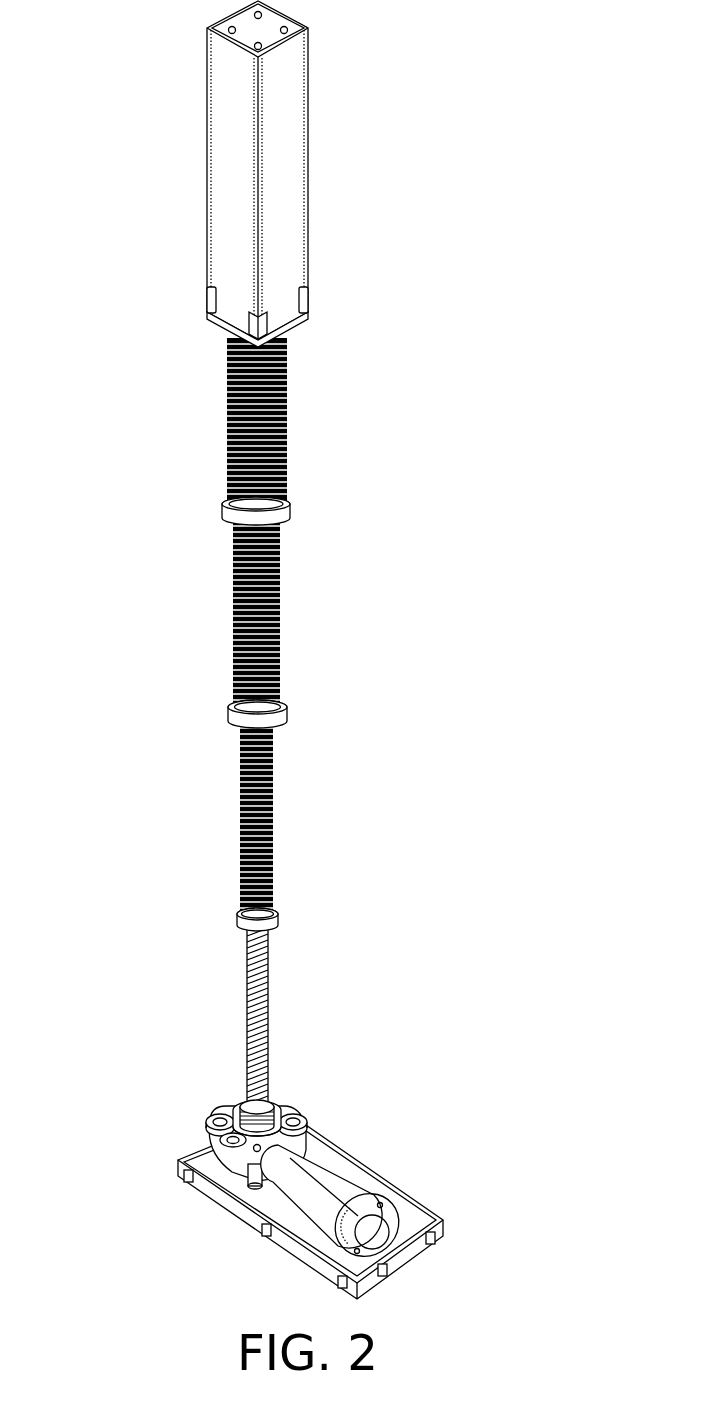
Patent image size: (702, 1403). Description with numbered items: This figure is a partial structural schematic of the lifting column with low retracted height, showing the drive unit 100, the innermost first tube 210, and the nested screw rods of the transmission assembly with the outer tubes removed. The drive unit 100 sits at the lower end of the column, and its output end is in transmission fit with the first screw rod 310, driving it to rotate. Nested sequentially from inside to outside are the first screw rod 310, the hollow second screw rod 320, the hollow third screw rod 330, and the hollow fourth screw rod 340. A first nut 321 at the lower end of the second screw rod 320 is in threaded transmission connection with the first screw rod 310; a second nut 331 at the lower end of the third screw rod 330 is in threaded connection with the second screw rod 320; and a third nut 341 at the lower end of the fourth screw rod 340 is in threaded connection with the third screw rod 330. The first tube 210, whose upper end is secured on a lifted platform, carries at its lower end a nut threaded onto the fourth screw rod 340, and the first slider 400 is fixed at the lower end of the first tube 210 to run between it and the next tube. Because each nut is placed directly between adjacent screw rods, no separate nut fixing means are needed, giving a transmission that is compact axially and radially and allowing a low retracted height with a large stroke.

The drive unit 100 is at (410, 1218).
The first tube 210 is at (240, 162).
The first screw rod 310 is at (247, 1010).
The second screw rod 320 is at (243, 823).
The first nut 321 is at (273, 923).
The third screw rod 330 is at (247, 622).
The second nut 331 is at (277, 718).
The fourth screw rod 340 is at (227, 437).
The third nut 341 is at (283, 520).
The first slider 400 is at (207, 300).